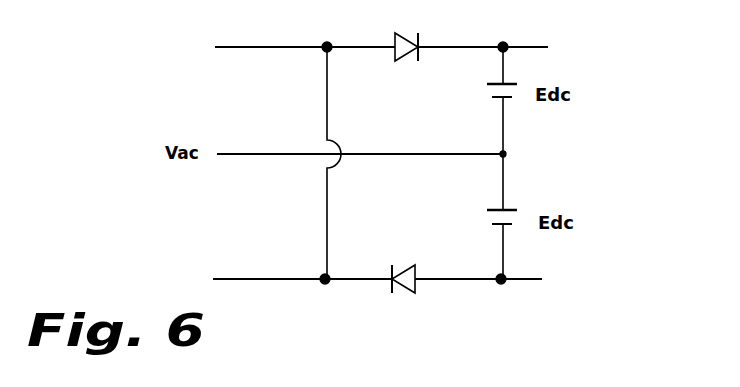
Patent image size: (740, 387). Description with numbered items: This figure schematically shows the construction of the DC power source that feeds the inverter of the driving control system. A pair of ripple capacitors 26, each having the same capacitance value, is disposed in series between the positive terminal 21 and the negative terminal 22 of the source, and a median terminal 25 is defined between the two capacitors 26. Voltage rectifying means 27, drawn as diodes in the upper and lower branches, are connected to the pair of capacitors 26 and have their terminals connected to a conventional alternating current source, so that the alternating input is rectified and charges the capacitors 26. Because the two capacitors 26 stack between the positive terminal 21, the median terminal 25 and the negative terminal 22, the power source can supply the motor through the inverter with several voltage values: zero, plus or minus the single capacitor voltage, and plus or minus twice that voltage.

The positive terminal 21 is at (330, 44).
The negative terminal 22 is at (323, 276).
The median terminal 25 is at (508, 153).
The ripple capacitor 26 is at (481, 90).
The voltage rectifying means 27 is at (419, 28).